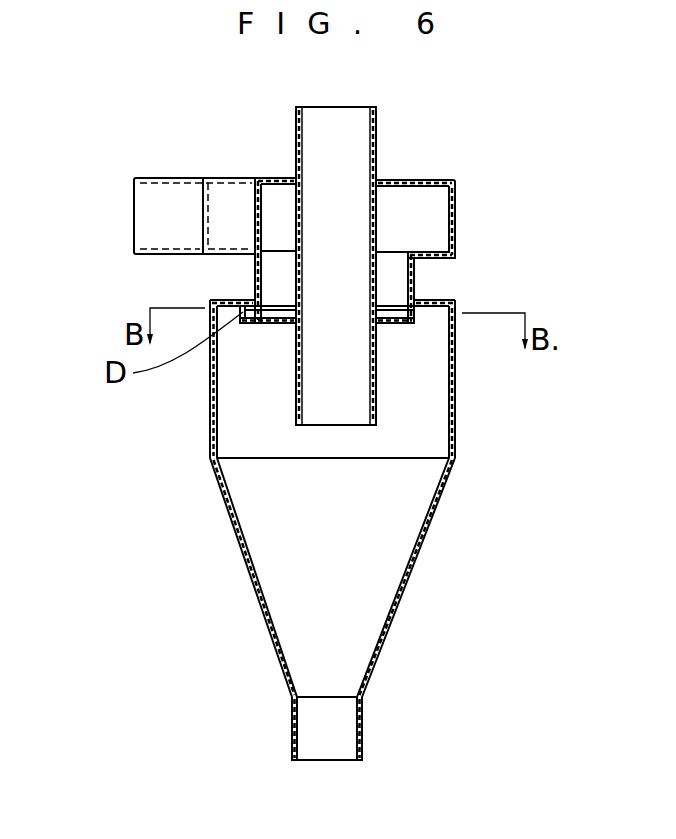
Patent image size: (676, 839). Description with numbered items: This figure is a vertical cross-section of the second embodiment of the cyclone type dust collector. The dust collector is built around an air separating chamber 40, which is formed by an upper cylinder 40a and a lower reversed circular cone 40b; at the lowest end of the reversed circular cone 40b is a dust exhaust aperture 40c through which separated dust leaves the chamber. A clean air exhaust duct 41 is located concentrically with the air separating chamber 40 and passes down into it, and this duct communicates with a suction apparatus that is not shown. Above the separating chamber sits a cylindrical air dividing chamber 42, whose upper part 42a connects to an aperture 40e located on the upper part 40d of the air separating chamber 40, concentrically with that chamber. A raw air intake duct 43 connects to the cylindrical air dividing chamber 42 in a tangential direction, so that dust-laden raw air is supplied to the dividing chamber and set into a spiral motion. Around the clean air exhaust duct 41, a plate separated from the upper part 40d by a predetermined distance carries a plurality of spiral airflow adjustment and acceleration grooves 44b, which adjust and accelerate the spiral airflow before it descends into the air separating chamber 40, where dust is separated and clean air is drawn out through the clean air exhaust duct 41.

The air separating chamber 40 is at (329, 546).
The upper cylinder 40a is at (210, 449).
The reversed circular cone 40b is at (256, 593).
The dust exhaust aperture 40c is at (332, 752).
The upper part 40d is at (430, 302).
The aperture 40e is at (395, 272).
The clean air exhaust duct 41 is at (380, 130).
The cylindrical air dividing chamber 42 is at (432, 217).
The upper part 42a is at (420, 182).
The raw air intake duct 43 is at (147, 214).
The spiral airflow adjustment and acceleration grooves 44b is at (414, 322).